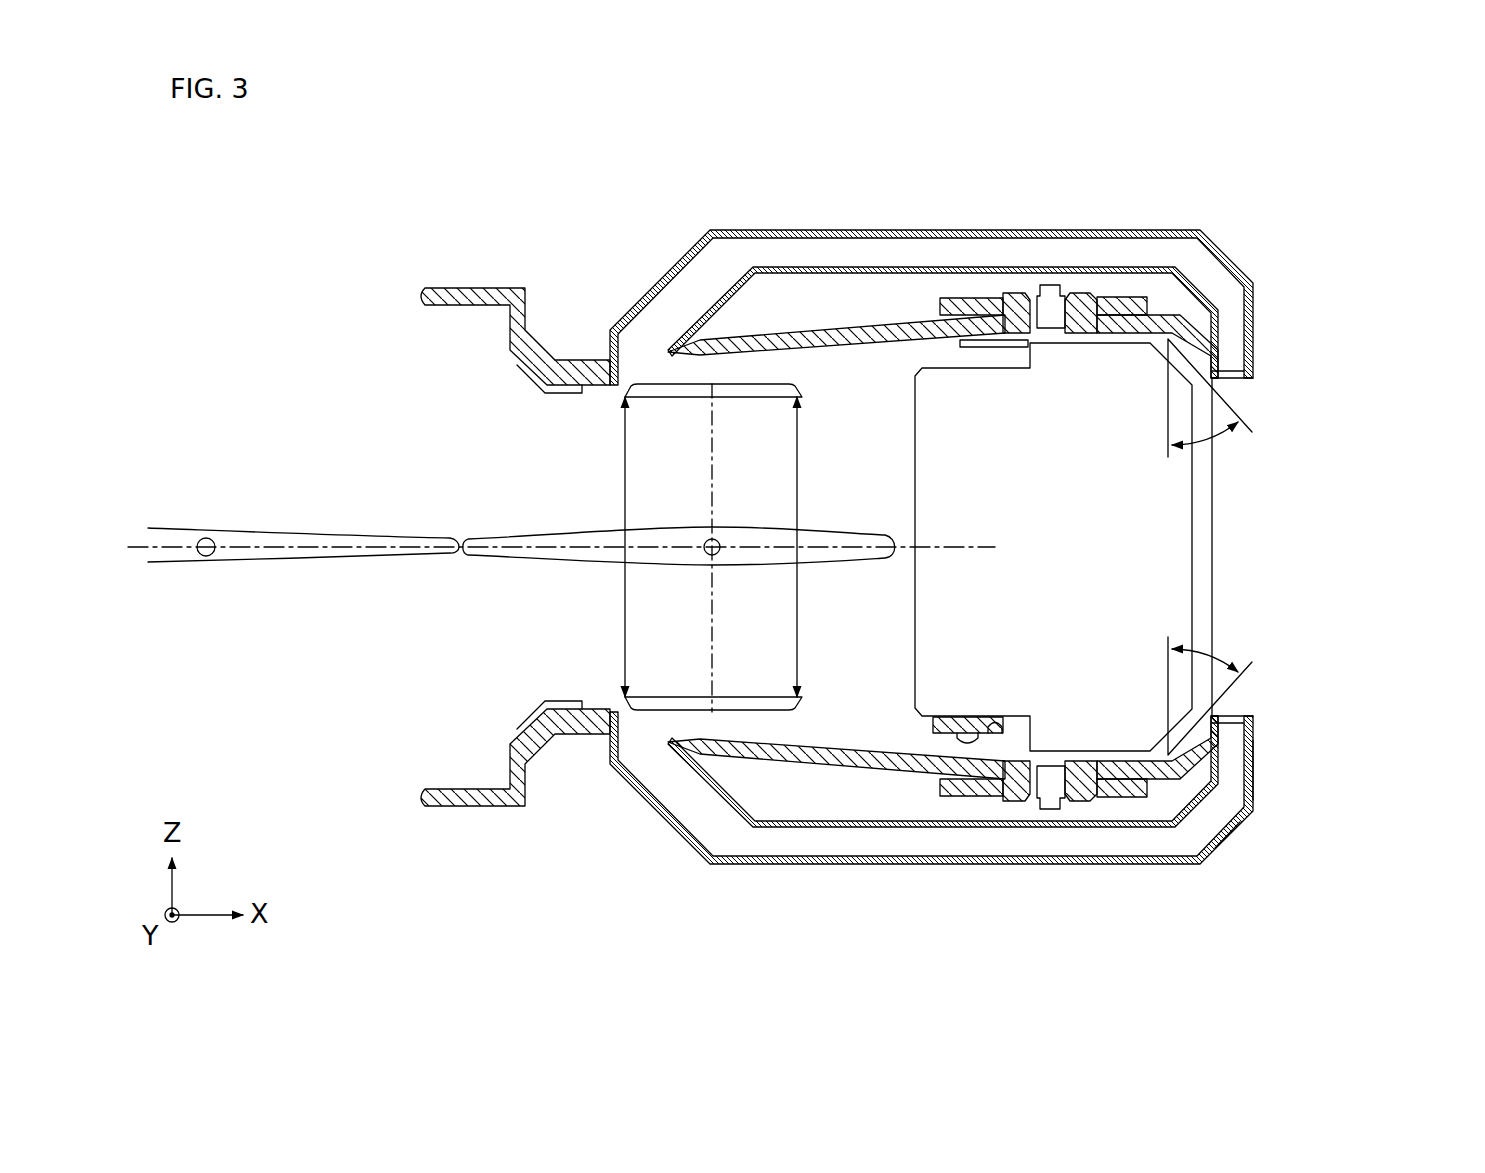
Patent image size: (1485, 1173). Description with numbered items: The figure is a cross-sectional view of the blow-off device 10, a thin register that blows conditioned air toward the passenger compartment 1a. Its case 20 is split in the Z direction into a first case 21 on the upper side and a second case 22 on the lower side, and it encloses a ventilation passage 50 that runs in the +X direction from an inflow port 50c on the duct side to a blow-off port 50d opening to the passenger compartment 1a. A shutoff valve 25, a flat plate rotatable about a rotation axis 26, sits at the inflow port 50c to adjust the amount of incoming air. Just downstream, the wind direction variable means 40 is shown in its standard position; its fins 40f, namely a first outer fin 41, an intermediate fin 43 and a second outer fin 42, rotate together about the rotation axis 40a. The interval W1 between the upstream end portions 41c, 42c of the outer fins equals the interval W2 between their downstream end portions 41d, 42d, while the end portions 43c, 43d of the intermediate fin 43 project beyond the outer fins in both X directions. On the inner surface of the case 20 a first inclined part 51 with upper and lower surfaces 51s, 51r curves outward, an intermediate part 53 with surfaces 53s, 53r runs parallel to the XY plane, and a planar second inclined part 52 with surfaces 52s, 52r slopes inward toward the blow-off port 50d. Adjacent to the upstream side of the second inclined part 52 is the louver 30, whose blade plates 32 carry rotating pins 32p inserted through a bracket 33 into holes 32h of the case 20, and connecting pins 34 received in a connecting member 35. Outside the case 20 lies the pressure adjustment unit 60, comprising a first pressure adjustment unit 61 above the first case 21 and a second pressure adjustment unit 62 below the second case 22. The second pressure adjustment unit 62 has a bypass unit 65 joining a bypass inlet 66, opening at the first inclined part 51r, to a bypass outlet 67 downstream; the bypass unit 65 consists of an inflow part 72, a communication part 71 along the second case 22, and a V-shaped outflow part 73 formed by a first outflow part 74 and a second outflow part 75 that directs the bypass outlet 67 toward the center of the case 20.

The blow-off device 10 is at (1209, 168).
The passenger compartment 1a is at (1444, 570).
The case 20 is at (898, 308).
The first case 21 is at (808, 267).
The second case 22 is at (830, 763).
The shutoff valve 25 is at (268, 562).
The rotation axis 26 is at (207, 537).
The louver 30 is at (1170, 535).
The blade plate 32 is at (1152, 572).
The rotating pin 32p is at (1050, 285).
The hole 32h is at (1082, 300).
The bracket 33 is at (1005, 305).
The connecting pin 34 is at (988, 740).
The connecting member 35 is at (1012, 765).
The wind direction variable means 40 is at (750, 372).
The fins 40f is at (691, 531).
The rotation axis 40a is at (710, 557).
The first outer fin 41 is at (742, 398).
The end portion of the first outer fin in the −X direction 41c is at (627, 391).
The downstream side end portion of the first outer fin 41d is at (806, 386).
The second outer fin 42 is at (745, 697).
The end portion of the second outer fin in the −X direction 42c is at (625, 698).
The downstream side end portion of the second outer fin 42d is at (800, 698).
The intermediate fin 43 is at (808, 535).
The end portion of the intermediate fin in the −X direction 43c is at (461, 556).
The end portion of the intermediate fin in the +X direction 43d is at (893, 535).
The ventilation passage 50 is at (862, 740).
The inflow port 50c is at (452, 448).
The blow-off port 50d is at (1215, 468).
The first inclined part 51 is at (660, 350).
The first inclined part 51s is at (515, 340).
The first inclined part 51r is at (515, 753).
The second inclined part 52 is at (1183, 365).
The second inclined part 52s is at (1157, 346).
The second inclined part 52r is at (1175, 743).
The intermediate part 53 is at (958, 348).
The intermediate part 53s is at (994, 343).
The intermediate part 53r is at (962, 740).
The pressure adjustment unit 60 is at (840, 228).
The first pressure adjustment unit 61 is at (870, 230).
The second pressure adjustment unit 62 is at (833, 870).
The bypass unit 65 is at (908, 866).
The bypass inlet 66 is at (672, 732).
The bypass outlet 67 is at (1233, 716).
The communication part 71 is at (935, 780).
The inflow part 72 is at (612, 772).
The outflow part 73 is at (1370, 752).
The first outflow part 74 is at (1243, 826).
The second outflow part 75 is at (1252, 767).
The interval W1 is at (625, 490).
The interval W2 is at (797, 442).